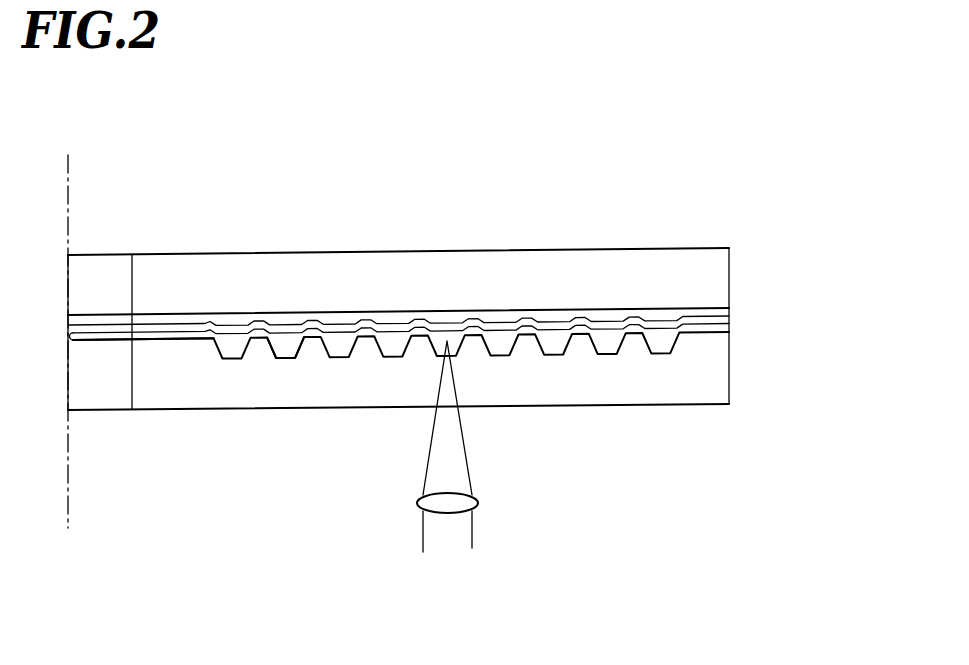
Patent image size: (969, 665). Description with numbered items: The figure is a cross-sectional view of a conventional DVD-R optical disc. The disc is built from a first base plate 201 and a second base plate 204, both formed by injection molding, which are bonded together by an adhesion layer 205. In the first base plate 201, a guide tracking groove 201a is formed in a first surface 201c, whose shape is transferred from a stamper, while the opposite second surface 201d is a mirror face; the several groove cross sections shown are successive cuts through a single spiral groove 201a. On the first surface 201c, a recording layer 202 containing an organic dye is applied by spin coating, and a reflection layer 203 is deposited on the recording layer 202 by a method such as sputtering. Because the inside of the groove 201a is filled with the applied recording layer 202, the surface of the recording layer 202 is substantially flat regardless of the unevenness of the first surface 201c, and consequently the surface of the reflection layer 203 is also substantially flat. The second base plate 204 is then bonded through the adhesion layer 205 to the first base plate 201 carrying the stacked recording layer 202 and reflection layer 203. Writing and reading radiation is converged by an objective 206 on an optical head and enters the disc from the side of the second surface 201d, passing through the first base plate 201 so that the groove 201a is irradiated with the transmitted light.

The first base plate 201 is at (645, 387).
The guide tracking groove 201a is at (288, 365).
The first surface 201c is at (197, 344).
The second surface 201d is at (182, 415).
The recording layer 202 is at (663, 340).
The reflection layer 203 is at (698, 325).
The second base plate 204 is at (537, 262).
The adhesion layer 205 is at (610, 315).
The objective 206 is at (458, 500).